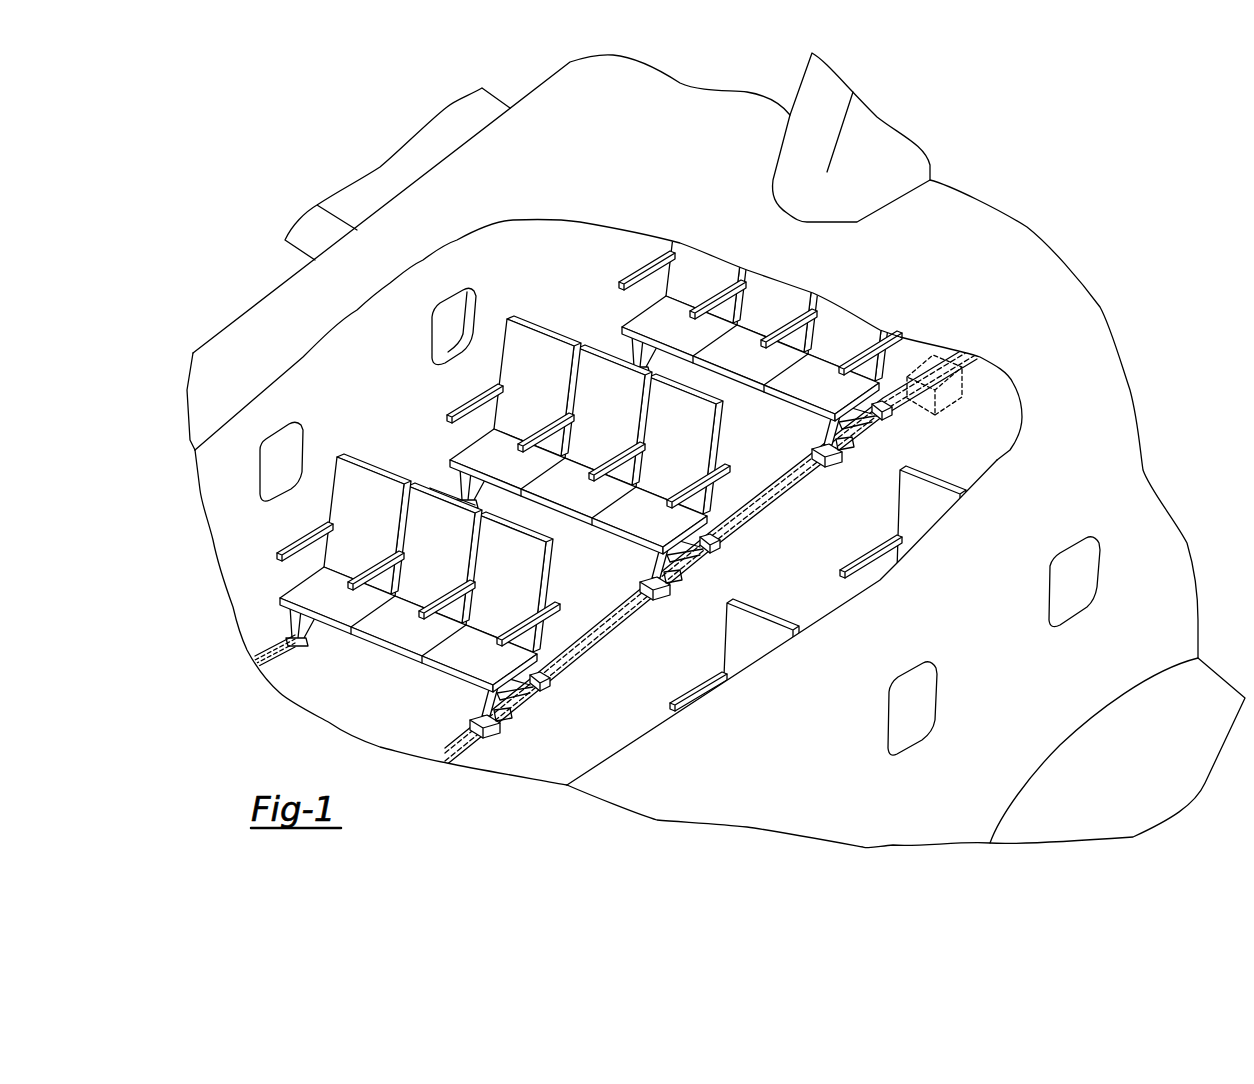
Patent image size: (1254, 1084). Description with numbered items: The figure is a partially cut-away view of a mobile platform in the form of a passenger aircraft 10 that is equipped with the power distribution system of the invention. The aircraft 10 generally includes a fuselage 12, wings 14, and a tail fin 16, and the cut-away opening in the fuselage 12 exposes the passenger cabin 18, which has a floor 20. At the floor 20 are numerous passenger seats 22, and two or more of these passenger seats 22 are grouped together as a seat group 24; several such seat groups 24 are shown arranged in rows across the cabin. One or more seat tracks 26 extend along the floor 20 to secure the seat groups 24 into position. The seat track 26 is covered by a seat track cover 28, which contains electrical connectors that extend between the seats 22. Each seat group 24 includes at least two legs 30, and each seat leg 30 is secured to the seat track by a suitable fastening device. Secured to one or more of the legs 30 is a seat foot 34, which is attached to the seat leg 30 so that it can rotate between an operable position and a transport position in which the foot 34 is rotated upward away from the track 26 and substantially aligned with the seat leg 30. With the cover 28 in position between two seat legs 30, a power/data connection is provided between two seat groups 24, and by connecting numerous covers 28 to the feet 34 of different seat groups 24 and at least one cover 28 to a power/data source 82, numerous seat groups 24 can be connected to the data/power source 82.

The aircraft 10 is at (243, 247).
The fuselage 12 is at (1097, 350).
The wings 14 is at (388, 178).
The tail fin 16 is at (908, 155).
The passenger cabin 18 is at (223, 517).
The floor 20 is at (538, 762).
The passenger seats 22 is at (393, 633).
The seat group 24 is at (602, 460).
The seat tracks 26 is at (280, 664).
The seat track cover 28 is at (600, 647).
The seat legs 30 is at (492, 697).
The seat foot 34 is at (500, 720).
The power/data source 82 is at (953, 397).